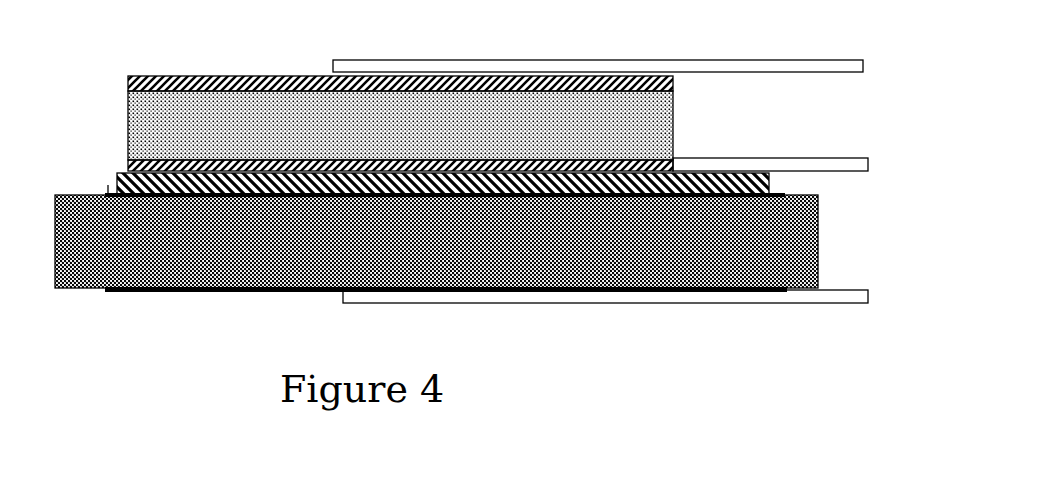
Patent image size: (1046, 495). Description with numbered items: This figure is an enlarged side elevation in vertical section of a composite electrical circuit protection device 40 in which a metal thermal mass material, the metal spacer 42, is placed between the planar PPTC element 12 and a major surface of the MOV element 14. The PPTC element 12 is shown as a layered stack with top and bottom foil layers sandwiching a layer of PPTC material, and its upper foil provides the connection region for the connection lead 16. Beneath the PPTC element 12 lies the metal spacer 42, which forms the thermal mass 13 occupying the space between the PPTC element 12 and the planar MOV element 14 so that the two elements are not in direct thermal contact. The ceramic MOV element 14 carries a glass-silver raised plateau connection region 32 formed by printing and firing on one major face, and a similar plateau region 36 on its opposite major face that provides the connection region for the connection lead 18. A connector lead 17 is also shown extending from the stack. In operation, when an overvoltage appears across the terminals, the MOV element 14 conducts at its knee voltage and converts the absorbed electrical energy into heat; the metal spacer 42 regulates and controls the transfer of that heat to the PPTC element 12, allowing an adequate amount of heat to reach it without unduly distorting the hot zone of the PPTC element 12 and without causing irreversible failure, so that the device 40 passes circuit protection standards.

The PPTC element 12 is at (223, 63).
The thermal mass 13 is at (108, 158).
The MOV element 14 is at (820, 246).
The connection lead 16 is at (728, 66).
The connector lead 17 is at (790, 162).
The connection lead 18 is at (673, 298).
The raised plateau connection region 32 is at (108, 194).
The plateau region 36 is at (160, 293).
The device 40 is at (475, 317).
The metal spacer 42 is at (770, 183).